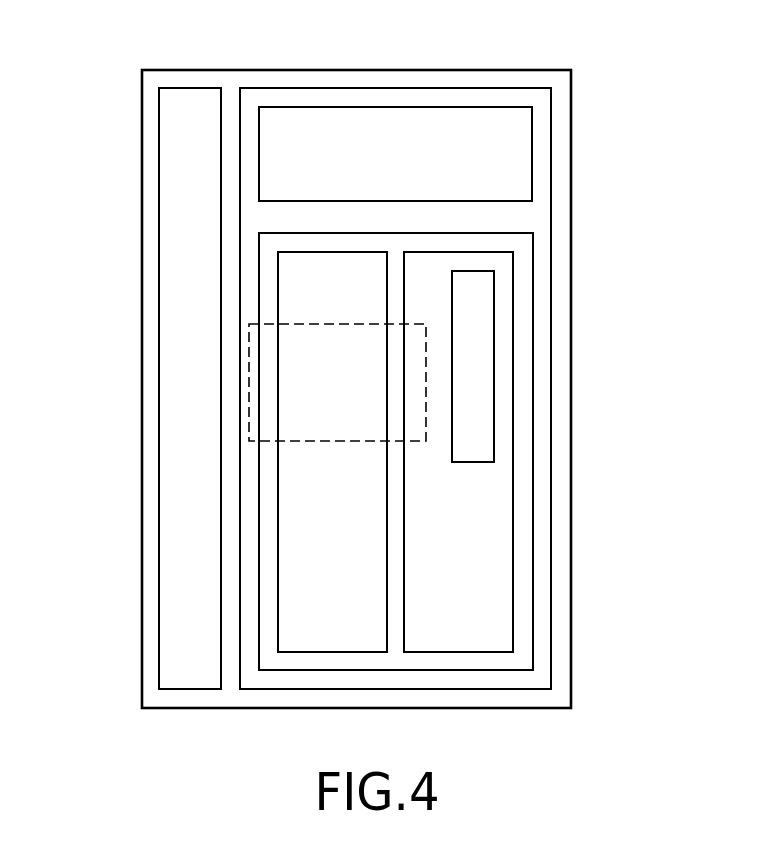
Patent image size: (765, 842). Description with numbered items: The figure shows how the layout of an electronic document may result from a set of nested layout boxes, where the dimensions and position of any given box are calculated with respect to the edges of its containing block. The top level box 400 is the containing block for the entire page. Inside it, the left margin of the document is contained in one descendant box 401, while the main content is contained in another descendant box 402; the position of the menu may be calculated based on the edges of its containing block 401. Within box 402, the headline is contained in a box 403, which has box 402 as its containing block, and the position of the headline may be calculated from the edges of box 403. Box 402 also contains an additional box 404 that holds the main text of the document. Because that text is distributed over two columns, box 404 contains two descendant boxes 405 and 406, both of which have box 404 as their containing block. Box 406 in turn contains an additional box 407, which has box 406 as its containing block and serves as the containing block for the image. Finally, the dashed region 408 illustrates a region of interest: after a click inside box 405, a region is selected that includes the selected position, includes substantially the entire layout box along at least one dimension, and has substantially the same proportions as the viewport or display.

The top level box 400 is at (240, 68).
The descendant box 401 is at (161, 190).
The descendant box 402 is at (410, 88).
The box 403 is at (511, 161).
The box 404 is at (529, 620).
The descendant box 405 is at (306, 585).
The descendant box 406 is at (437, 585).
The box 407 is at (470, 453).
The region 408 is at (338, 324).